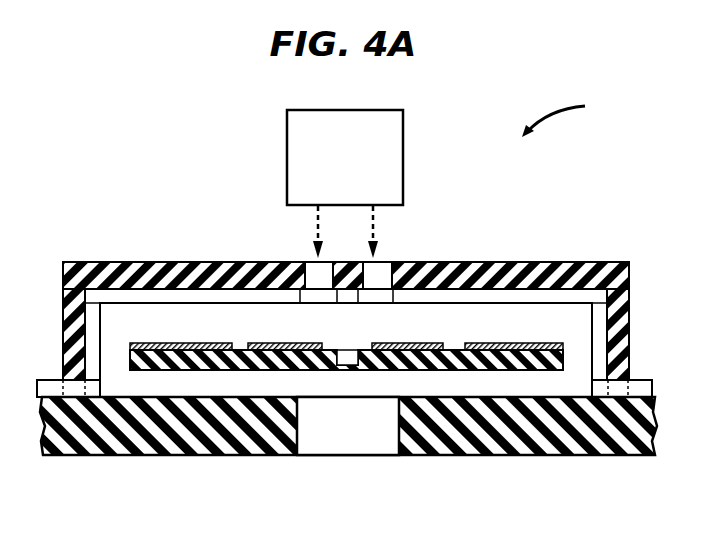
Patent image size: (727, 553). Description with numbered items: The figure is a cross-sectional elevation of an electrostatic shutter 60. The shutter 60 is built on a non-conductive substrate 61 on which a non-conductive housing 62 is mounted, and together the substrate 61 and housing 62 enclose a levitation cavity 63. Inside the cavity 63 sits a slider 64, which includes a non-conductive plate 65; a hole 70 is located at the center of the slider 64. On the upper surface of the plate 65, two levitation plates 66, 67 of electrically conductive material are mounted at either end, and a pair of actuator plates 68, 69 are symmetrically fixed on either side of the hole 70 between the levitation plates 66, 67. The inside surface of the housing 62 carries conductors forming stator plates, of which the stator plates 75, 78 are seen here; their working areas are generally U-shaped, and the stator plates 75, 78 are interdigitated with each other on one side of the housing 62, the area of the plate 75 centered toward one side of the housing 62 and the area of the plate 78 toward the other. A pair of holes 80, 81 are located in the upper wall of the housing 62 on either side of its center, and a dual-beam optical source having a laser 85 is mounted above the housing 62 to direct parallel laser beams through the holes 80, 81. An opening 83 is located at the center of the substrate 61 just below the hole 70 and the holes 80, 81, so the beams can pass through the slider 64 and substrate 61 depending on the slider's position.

The shutter 60 is at (567, 113).
The non-conductive substrate 61 is at (72, 457).
The non-conductive housing 62 is at (118, 262).
The levitation cavity 63 is at (578, 373).
The slider 64 is at (563, 351).
The non-conductive plate 65 is at (130, 357).
The levitation plate 66 is at (535, 343).
The levitation plate 67 is at (201, 343).
The actuator plate 68 is at (270, 342).
The actuator plate 69 is at (415, 343).
The hole 70 is at (345, 365).
The stator plate 75 is at (163, 296).
The stator plate 78 is at (483, 262).
The hole 80 is at (310, 262).
The hole 81 is at (382, 262).
The opening 83 is at (378, 443).
The laser 85 is at (287, 147).